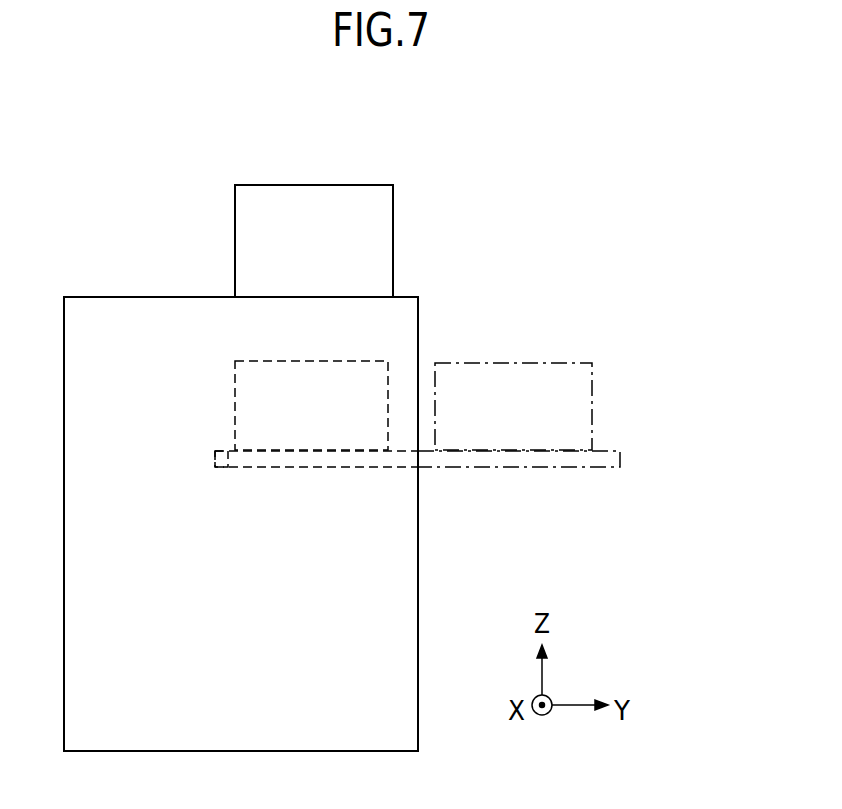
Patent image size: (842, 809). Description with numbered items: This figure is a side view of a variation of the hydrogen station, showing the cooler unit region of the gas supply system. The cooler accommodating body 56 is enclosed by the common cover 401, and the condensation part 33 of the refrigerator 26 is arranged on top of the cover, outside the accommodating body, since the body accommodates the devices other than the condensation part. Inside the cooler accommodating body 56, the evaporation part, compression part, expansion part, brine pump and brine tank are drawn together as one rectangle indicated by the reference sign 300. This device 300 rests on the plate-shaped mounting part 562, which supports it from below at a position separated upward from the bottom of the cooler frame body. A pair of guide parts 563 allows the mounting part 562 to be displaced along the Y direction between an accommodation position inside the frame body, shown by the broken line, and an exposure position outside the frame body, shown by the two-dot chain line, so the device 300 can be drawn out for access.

The refrigerator 26 is at (543, 185).
The condensation part 33 is at (356, 185).
The cooler accommodating body 56 is at (417, 285).
The device 300 is at (338, 360).
The common cover 401 is at (105, 297).
The mounting part 562 is at (227, 448).
The guide parts 563 is at (328, 468).